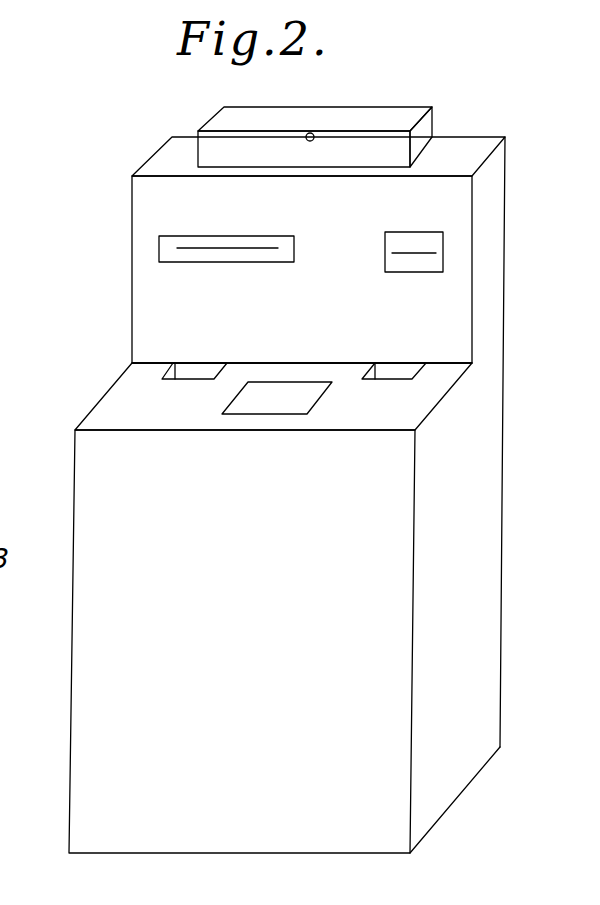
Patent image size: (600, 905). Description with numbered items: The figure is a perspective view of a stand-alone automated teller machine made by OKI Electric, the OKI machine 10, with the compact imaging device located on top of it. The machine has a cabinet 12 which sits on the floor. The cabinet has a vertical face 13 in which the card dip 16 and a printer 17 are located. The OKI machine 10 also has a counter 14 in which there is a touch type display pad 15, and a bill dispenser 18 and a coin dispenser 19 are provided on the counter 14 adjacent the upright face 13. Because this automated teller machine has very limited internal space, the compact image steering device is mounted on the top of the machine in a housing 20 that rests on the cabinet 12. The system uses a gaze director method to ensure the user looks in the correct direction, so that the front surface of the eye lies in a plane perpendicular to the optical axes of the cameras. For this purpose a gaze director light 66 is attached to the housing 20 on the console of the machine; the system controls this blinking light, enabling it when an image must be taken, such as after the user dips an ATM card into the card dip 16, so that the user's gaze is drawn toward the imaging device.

The OKI machine 10 is at (128, 147).
The cabinet 12 is at (492, 231).
The vertical face 13 is at (330, 324).
The counter 14 is at (402, 411).
The touch type display pad 15 is at (295, 398).
The card dip 16 is at (428, 266).
The printer 17 is at (165, 257).
The bill dispenser 18 is at (403, 373).
The coin dispenser 19 is at (192, 370).
The housing 20 is at (425, 127).
The gaze director light 66 is at (315, 139).